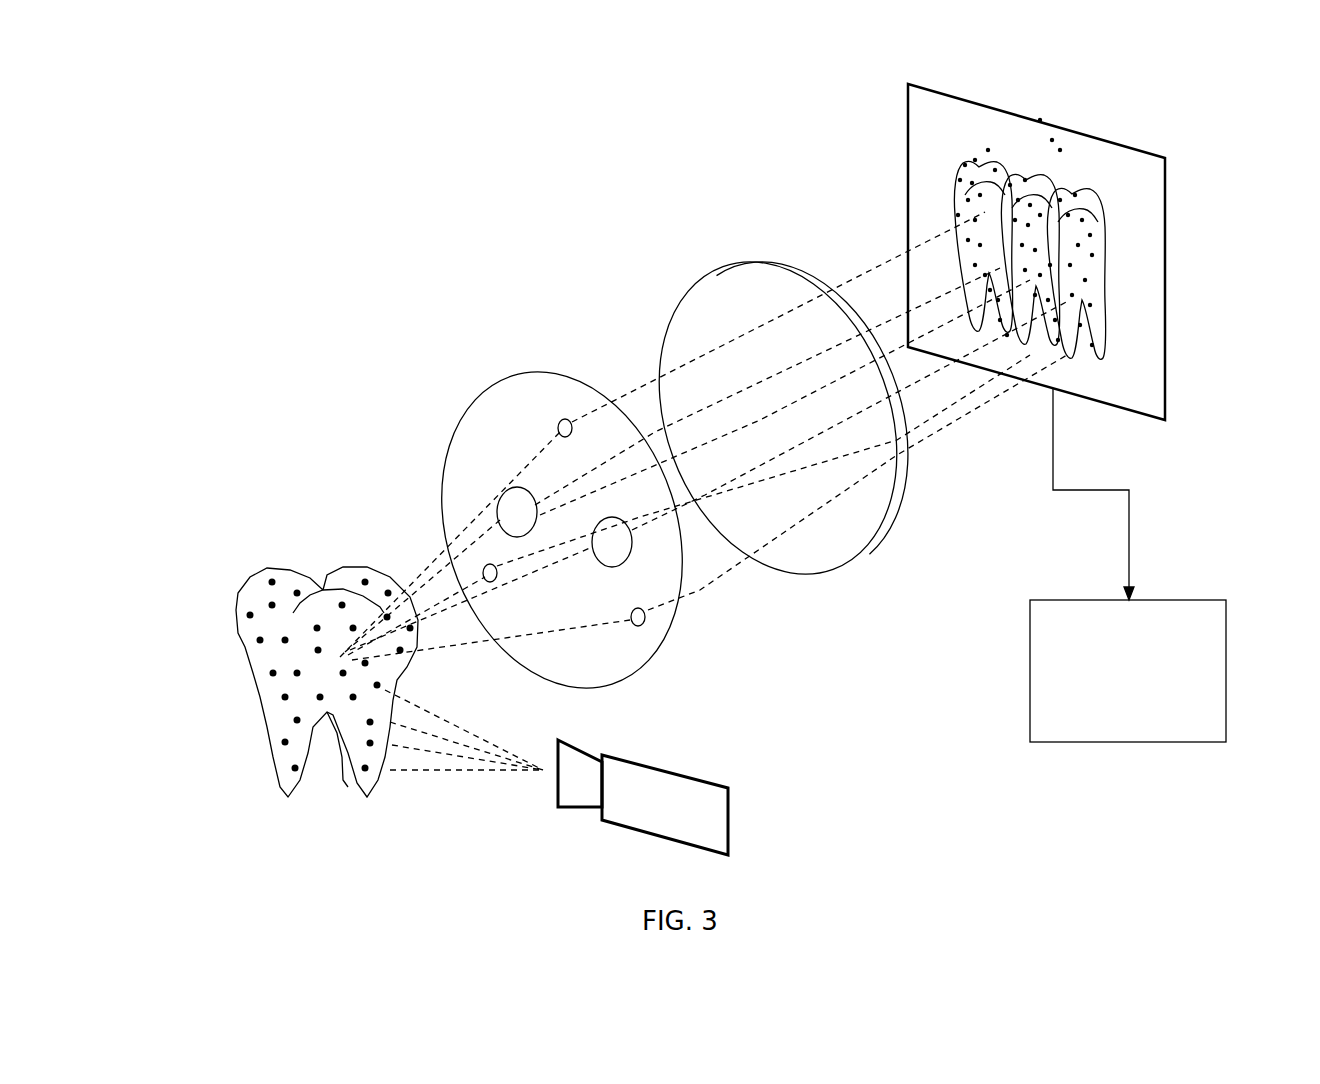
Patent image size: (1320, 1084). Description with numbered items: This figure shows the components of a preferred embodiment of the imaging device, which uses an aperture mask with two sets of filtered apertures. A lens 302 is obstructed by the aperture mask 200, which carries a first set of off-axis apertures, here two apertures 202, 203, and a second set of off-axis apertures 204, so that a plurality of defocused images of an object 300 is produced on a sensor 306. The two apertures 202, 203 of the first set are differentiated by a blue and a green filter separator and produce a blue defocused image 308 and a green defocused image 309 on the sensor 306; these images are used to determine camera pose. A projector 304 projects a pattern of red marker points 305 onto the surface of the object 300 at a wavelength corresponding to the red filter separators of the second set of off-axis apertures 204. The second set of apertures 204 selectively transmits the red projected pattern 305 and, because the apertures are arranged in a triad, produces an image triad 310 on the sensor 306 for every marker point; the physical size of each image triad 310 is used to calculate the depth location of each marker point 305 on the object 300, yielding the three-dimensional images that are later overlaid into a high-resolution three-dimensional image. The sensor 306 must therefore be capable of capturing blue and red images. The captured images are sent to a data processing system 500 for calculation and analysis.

The aperture mask 200 is at (535, 508).
The blue-filtered off-axis aperture of the first set 202 is at (427, 486).
The green-filtered off-axis aperture of the first set 203 is at (720, 598).
The second set of off-axis apertures 204 is at (633, 493).
The object 300 is at (272, 682).
The lens 302 is at (783, 390).
The projector 304 is at (722, 797).
The marker points 305 is at (331, 724).
The sensor 306 is at (1094, 252).
The blue defocused image 308 is at (915, 227).
The green defocused image 309 is at (1158, 272).
The image triad of projected marker points 310 is at (1089, 208).
The data processing system 500 is at (1144, 565).